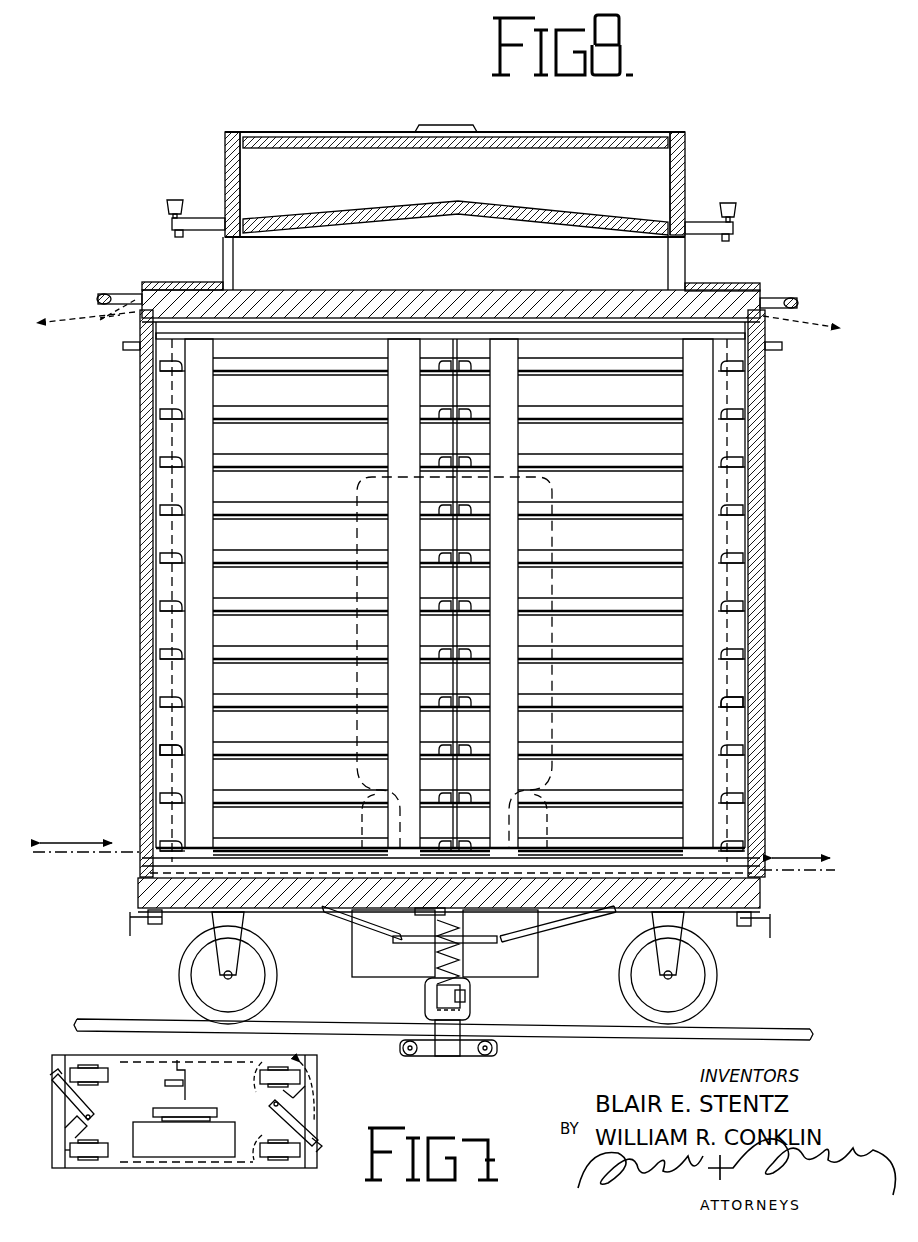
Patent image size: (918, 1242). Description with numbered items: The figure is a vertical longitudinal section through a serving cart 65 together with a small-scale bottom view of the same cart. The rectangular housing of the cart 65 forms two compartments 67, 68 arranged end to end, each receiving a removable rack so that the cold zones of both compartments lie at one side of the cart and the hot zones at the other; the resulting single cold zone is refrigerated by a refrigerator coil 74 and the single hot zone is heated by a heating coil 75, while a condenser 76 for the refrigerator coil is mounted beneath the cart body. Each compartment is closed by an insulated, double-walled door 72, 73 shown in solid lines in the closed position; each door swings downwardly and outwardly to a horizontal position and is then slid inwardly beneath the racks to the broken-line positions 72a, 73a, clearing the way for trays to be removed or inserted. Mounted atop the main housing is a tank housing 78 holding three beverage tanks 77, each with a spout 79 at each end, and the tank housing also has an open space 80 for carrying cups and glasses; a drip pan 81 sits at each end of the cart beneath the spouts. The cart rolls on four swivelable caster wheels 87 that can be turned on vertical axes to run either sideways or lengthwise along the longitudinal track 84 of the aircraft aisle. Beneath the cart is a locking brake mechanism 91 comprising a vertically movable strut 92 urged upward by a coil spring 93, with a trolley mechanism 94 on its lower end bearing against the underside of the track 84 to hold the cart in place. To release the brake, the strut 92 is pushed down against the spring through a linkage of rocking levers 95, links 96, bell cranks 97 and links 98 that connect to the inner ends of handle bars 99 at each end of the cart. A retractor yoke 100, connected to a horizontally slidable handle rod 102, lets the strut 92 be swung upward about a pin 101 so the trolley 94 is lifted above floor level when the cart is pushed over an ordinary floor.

In FIG. 8, the cart 65 is at (752, 285).
In FIG. 8, the compartment 67 is at (132, 726).
In FIG. 8, the compartment 68 is at (764, 652).
In FIG. 8, the door 72 is at (152, 787).
In FIG. 8, the door in slid-in position 72a is at (86, 828).
In FIG. 8, the door 73 is at (755, 780).
In FIG. 8, the door in slid-in position 73a is at (790, 870).
In FIG. 9, the refrigerator coil 74 is at (206, 1056).
In FIG. 8, the heating coil 75 is at (556, 532).
In FIG. 9, the heating coil 75 is at (185, 1173).
In FIG. 8, the condenser 76 is at (538, 963).
In FIG. 8, the beverage tank 77 is at (472, 195).
In FIG. 8, the tank housing 78 is at (686, 173).
In FIG. 8, the spout 79 is at (192, 216).
In FIG. 8, the open space 80 is at (463, 275).
In FIG. 8, the drip pan 81 is at (192, 287).
In FIG. 8, the longitudinal track 84 is at (743, 1032).
In FIG. 8, the caster wheel 87 is at (718, 978).
In FIG. 9, the caster wheel 87 is at (103, 1158).
In FIG. 8, the brake mechanism 91 is at (410, 991).
In FIG. 8, the strut 92 is at (425, 1018).
In FIG. 8, the coil spring 93 is at (434, 944).
In FIG. 8, the trolley mechanism 94 is at (422, 1053).
In FIG. 8, the rocking lever 95 is at (463, 970).
In FIG. 8, the link 96 is at (545, 923).
In FIG. 8, the bell crank 97 is at (758, 844).
In FIG. 8, the link 98 is at (727, 445).
In FIG. 8, the handle bar 99 is at (112, 296).
In FIG. 8, the yoke 100 is at (464, 1008).
In FIG. 9, the yoke 100 is at (182, 1104).
In FIG. 8, the pin 101 is at (468, 996).
In FIG. 9, the handle rod 102 is at (185, 1044).